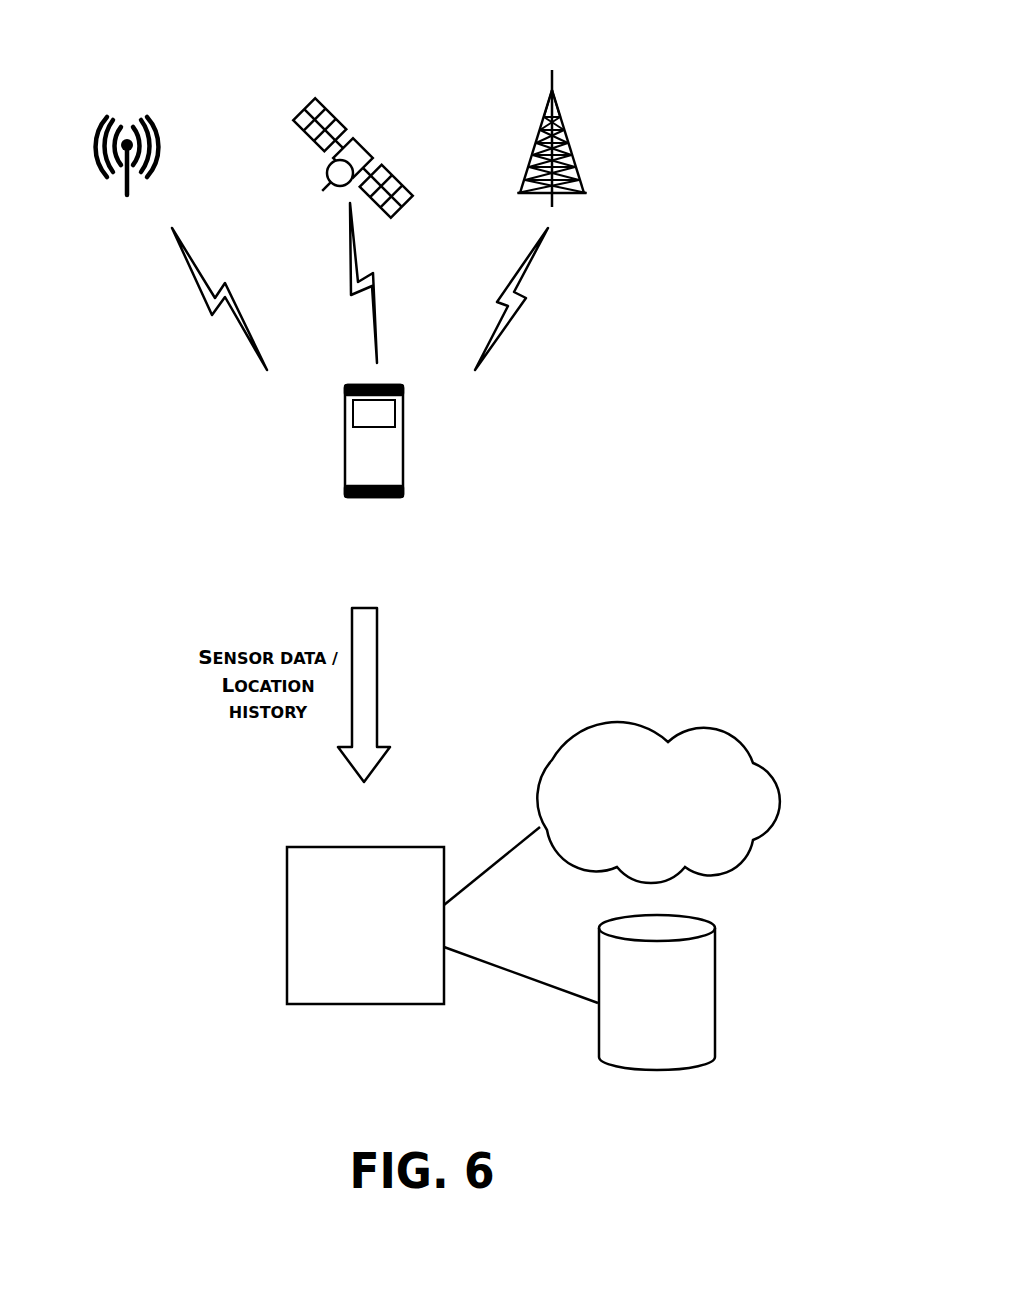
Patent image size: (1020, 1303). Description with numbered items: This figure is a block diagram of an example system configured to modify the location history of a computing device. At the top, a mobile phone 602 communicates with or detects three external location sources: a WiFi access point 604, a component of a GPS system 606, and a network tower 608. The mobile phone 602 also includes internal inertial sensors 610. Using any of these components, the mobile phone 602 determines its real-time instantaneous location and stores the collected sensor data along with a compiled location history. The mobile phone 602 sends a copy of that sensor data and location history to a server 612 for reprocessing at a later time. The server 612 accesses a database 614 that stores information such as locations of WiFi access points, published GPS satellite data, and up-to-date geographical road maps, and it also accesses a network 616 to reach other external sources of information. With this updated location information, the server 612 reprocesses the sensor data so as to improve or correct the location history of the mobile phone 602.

The mobile phone 602 is at (403, 473).
The WiFi access point 604 is at (127, 98).
The component of a GPS system 606 is at (354, 98).
The network tower 608 is at (578, 103).
The internal inertial sensors 610 is at (368, 412).
The server 612 is at (347, 951).
The database 614 is at (638, 1027).
The network 616 is at (638, 832).